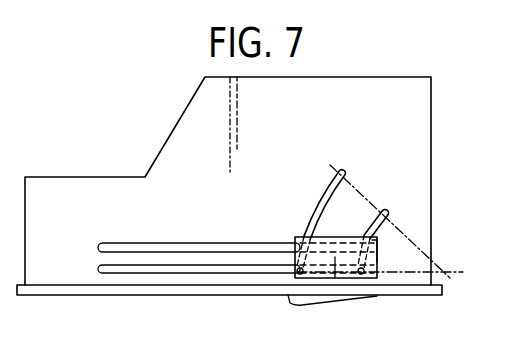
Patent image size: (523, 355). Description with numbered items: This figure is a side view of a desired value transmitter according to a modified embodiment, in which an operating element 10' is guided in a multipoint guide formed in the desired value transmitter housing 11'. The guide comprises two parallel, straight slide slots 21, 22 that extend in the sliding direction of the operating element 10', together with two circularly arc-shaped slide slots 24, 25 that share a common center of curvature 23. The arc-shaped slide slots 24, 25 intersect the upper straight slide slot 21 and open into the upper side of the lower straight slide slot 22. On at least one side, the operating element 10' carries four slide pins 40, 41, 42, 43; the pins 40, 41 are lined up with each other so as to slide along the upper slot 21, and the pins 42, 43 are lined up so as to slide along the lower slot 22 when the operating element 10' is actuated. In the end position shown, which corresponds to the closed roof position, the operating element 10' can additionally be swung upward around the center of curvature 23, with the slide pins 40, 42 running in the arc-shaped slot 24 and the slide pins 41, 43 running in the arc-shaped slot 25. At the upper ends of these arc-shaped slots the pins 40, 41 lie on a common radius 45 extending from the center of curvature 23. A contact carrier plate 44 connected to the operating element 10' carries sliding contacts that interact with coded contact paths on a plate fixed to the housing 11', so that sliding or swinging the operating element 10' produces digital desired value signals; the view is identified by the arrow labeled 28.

The operating element 10' is at (229, 317).
The desired value transmitter housing 11' is at (228, 181).
The upper straight slide slot 21 is at (130, 244).
The lower straight slide slot 22 is at (162, 270).
The center of curvature 23 is at (443, 272).
The arc-shaped slide slot 24 is at (323, 193).
The arc-shaped slide slot 25 is at (384, 223).
The burner assembly 28 is at (228, 181).
The slide pin 40 is at (297, 239).
The slide pin 41 is at (376, 246).
The slide pin 42 is at (293, 273).
The slide pin 43 is at (380, 278).
The contact carrier plate 44 is at (335, 278).
The common radius 45 is at (368, 201).